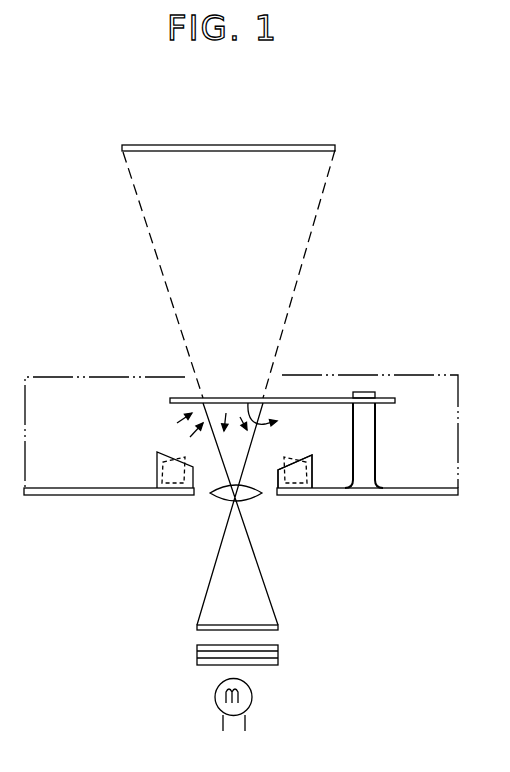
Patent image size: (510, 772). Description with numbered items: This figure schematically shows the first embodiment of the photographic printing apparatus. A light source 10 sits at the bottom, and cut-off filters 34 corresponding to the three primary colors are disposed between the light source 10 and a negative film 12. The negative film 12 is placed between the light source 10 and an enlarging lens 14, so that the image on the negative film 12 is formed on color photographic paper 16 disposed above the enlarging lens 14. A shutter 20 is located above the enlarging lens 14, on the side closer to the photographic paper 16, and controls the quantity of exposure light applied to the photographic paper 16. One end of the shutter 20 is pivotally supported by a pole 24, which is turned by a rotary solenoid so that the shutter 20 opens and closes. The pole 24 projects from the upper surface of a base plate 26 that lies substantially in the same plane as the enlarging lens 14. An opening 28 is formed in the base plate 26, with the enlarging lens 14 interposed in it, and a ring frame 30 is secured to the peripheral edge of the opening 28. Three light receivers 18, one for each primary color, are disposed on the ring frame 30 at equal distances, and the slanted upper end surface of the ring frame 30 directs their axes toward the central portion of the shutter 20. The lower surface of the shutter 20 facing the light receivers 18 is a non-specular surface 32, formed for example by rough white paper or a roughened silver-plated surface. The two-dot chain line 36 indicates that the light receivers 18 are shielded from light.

The light source 10 is at (252, 693).
The negative film 12 is at (278, 630).
The enlarging lens 14 is at (262, 493).
The color photographic paper 16 is at (281, 145).
The light receivers 18 is at (290, 462).
The shutter 20 is at (170, 403).
The pole 24 is at (376, 425).
The base plate 26 is at (410, 488).
The opening 28 is at (277, 494).
The ring frame 30 is at (308, 468).
The non-specular surface 32 is at (248, 407).
The cut-off filters 34 is at (191, 645).
The two-dot chain line 36 is at (402, 375).